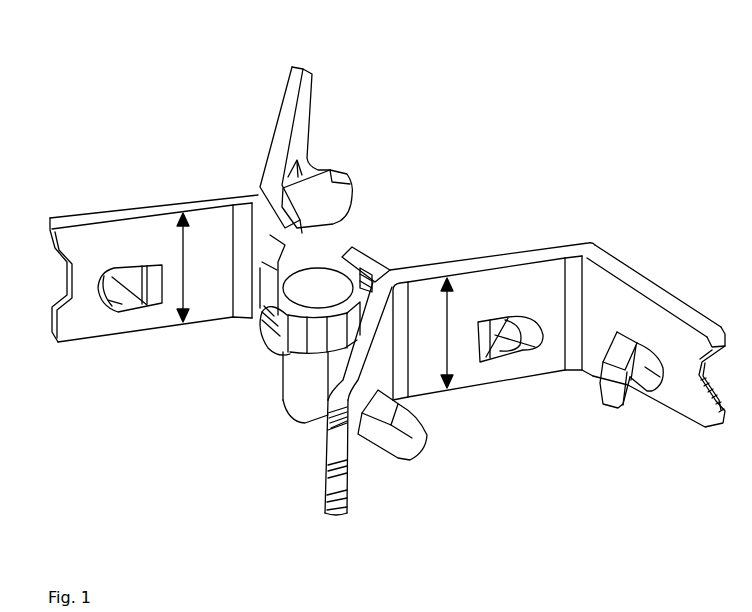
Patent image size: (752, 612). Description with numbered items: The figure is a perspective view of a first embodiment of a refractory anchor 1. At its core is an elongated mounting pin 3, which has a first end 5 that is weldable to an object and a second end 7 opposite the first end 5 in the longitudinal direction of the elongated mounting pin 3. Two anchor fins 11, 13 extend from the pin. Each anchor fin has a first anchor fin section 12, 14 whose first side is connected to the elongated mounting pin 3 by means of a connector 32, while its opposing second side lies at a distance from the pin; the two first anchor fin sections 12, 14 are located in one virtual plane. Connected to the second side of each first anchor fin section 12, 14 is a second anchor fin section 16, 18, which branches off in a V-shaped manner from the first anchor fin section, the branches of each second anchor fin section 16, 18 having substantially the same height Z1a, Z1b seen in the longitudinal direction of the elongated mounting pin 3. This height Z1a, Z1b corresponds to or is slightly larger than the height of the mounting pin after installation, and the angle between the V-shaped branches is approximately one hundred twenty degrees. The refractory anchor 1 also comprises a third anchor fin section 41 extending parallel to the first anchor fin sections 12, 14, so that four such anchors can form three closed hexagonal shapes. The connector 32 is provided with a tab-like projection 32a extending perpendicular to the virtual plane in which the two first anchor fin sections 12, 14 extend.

The refractory anchor 1 is at (556, 166).
The elongated mounting pin 3 is at (288, 400).
The first end 5 is at (298, 430).
The second end 7 is at (308, 287).
The anchor fin 11 is at (125, 357).
The first anchor fin section 12 is at (283, 210).
The anchor fin 13 is at (285, 488).
The first anchor fin section 14 is at (362, 260).
The second anchor fin section 16 is at (283, 112).
The second anchor fin section 18 is at (502, 252).
The connector 32 is at (318, 338).
The tab-like projection 32a is at (268, 336).
The third anchor fin section 41 is at (615, 300).
The height Z1a is at (198, 267).
The height Z1b is at (443, 333).